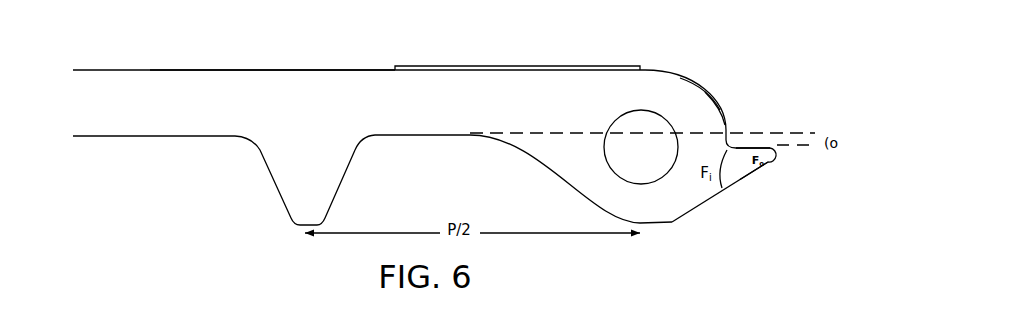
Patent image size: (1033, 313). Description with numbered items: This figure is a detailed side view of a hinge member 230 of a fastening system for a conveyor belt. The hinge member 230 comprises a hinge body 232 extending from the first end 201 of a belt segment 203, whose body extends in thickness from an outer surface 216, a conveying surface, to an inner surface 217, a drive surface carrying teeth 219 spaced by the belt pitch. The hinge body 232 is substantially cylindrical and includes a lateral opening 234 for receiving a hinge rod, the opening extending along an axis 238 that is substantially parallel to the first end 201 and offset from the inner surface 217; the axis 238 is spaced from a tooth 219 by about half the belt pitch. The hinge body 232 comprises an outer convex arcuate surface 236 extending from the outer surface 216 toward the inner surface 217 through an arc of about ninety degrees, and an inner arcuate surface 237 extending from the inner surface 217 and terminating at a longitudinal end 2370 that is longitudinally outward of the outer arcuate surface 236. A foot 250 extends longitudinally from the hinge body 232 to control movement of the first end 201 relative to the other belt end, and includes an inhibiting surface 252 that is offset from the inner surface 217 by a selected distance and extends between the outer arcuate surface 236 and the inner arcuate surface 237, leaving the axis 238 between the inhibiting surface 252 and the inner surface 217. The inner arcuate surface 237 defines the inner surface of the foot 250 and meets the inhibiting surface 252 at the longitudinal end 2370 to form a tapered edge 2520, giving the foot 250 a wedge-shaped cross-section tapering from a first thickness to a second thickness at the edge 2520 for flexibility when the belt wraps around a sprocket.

The first end 201 is at (507, 52).
The belt segment 203 is at (236, 107).
The outer surface 216 is at (293, 69).
The inner surface 217 is at (390, 137).
The tooth 219 is at (292, 184).
The hinge member 230 is at (685, 59).
The hinge body 232 is at (686, 95).
The lateral opening 234 is at (625, 133).
The outer convex arcuate surface 236 is at (711, 99).
The inner arcuate surface 237 is at (661, 225).
The axis 238 is at (646, 149).
The foot 250 is at (741, 166).
The inhibiting surface 252 is at (751, 148).
The longitudinal end 2370 is at (762, 165).
The tapered edge 2520 is at (781, 155).